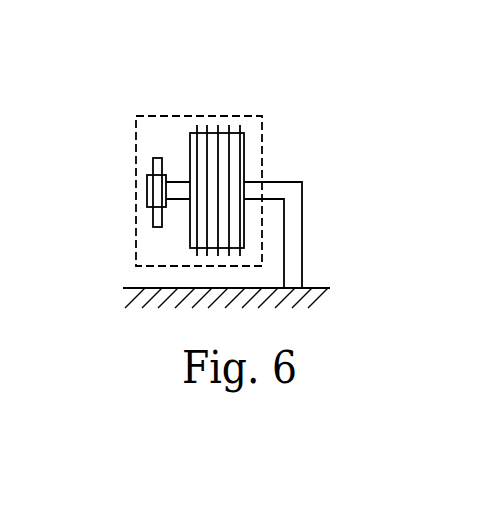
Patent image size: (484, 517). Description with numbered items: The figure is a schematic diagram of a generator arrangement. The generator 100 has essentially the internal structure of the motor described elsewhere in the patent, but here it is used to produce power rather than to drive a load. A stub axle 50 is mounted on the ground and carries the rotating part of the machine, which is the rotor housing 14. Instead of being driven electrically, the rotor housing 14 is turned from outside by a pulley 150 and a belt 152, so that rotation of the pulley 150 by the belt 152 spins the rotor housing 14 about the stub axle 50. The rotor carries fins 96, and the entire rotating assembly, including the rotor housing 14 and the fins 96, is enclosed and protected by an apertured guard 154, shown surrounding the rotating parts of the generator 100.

The generator 100 is at (300, 110).
The apertured guard 154 is at (238, 115).
The rotor housing 14 is at (188, 133).
The stub axle 50 is at (290, 197).
The pulley 150 is at (147, 191).
The belt 152 is at (153, 228).
The fins 96 is at (192, 252).